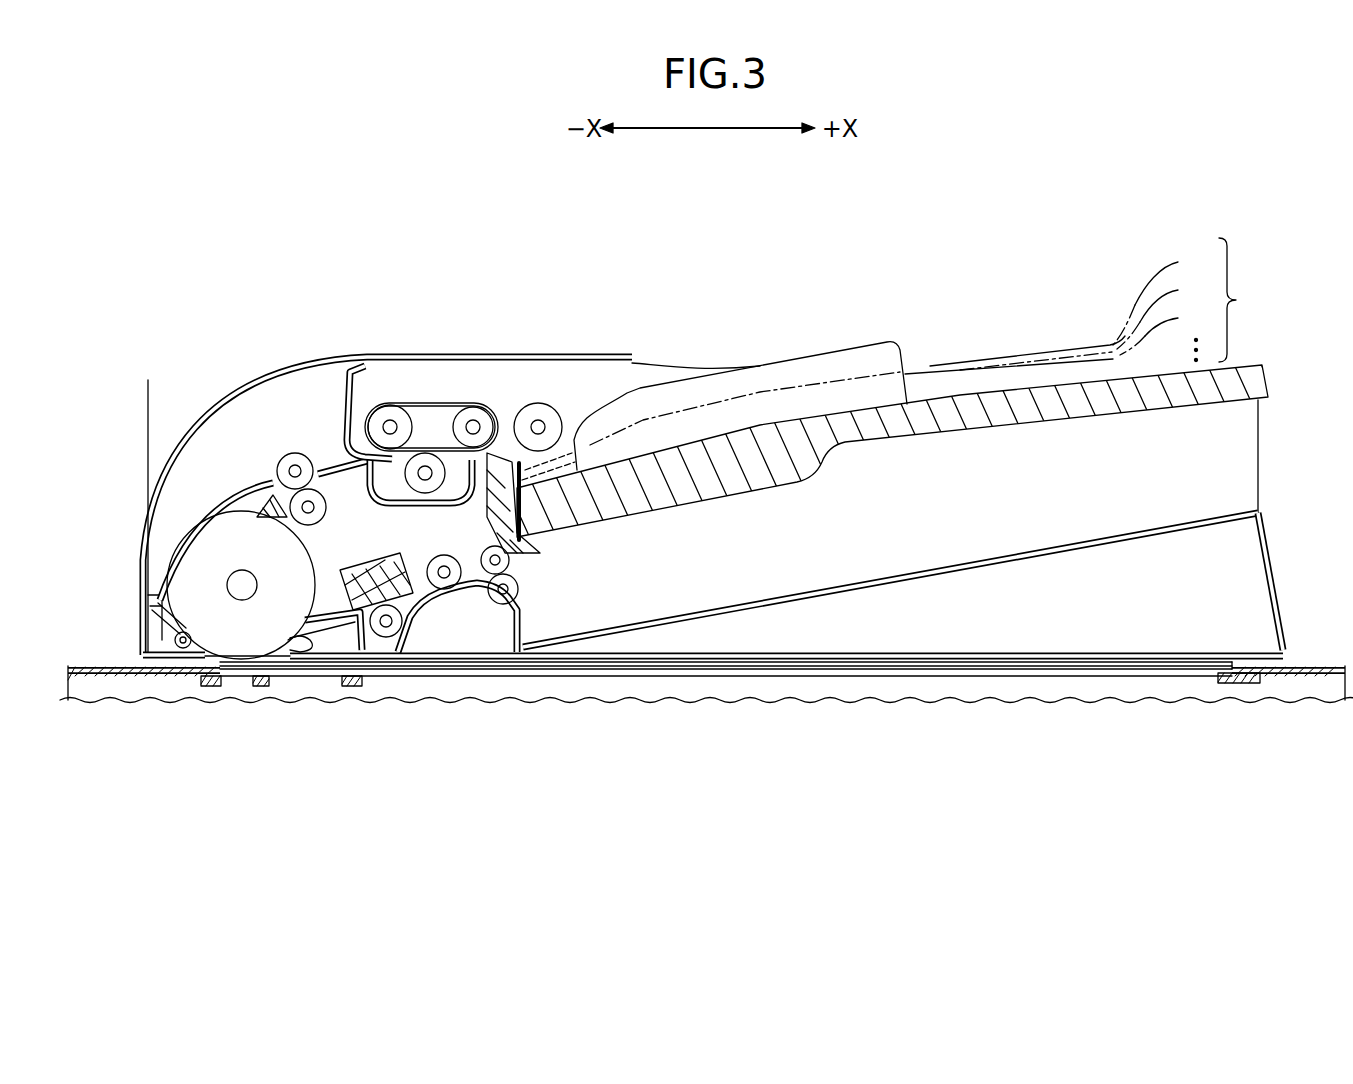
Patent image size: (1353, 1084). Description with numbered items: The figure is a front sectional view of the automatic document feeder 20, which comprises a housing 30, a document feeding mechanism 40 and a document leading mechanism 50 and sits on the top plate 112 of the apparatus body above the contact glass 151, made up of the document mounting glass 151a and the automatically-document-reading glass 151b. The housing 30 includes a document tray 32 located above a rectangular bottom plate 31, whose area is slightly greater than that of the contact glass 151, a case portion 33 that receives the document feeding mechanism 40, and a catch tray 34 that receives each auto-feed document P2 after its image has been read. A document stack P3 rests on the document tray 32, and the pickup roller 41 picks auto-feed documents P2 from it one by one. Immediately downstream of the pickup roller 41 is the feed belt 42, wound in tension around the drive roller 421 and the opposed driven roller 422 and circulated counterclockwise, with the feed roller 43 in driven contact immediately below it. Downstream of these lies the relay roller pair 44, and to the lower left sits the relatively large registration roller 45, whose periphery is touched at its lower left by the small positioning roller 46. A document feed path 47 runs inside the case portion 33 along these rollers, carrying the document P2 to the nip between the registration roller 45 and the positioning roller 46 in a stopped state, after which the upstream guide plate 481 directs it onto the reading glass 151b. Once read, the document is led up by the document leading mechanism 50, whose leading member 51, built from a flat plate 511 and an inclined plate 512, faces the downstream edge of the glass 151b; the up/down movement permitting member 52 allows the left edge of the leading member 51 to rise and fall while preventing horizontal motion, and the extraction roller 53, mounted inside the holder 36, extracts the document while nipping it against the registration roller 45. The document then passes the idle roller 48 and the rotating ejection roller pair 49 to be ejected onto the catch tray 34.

The automatic document feeder 20 is at (745, 216).
The housing 30 is at (560, 358).
The bottom plate 31 is at (163, 650).
The document tray 32 is at (907, 420).
The case portion 33 is at (276, 435).
The catch tray 34 is at (850, 586).
The holder 36 is at (412, 557).
The document feeding mechanism 40 is at (522, 267).
The pickup roller 41 is at (535, 405).
The feed belt 42 is at (430, 402).
The drive roller 421 is at (470, 408).
The driven roller 422 is at (388, 408).
The feed roller 43 is at (412, 458).
The relay roller pair 44 is at (297, 490).
The registration roller 45 is at (162, 540).
The positioning roller 46 is at (140, 585).
The document feed path 47 is at (240, 500).
The idle roller 48 is at (368, 652).
The upstream guide plate 481 is at (207, 686).
The ejection roller pair 49 is at (512, 558).
The document leading mechanism 50 is at (328, 604).
The leading member 51 is at (370, 766).
The flat plate 511 is at (330, 672).
The inclined plate 512 is at (270, 672).
The up/down movement permitting member 52 is at (405, 646).
The extraction roller 53 is at (277, 655).
The top plate 112 is at (112, 662).
The contact glass 151 is at (308, 876).
The document mounting glass 151a is at (452, 677).
The automatically-document-reading glass 151b is at (243, 677).
The auto-feed document P2 is at (1163, 304).
The document stack P3 is at (1246, 300).